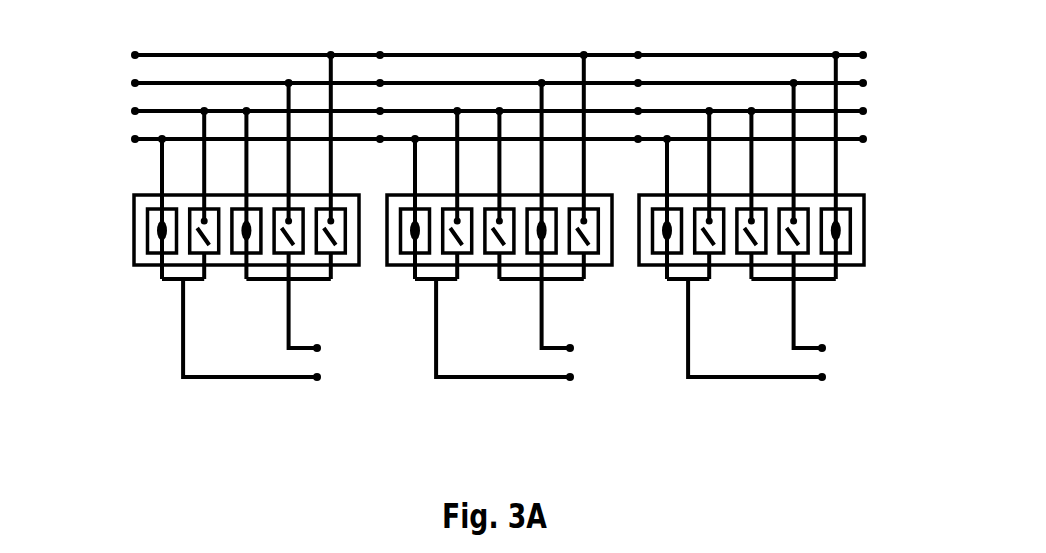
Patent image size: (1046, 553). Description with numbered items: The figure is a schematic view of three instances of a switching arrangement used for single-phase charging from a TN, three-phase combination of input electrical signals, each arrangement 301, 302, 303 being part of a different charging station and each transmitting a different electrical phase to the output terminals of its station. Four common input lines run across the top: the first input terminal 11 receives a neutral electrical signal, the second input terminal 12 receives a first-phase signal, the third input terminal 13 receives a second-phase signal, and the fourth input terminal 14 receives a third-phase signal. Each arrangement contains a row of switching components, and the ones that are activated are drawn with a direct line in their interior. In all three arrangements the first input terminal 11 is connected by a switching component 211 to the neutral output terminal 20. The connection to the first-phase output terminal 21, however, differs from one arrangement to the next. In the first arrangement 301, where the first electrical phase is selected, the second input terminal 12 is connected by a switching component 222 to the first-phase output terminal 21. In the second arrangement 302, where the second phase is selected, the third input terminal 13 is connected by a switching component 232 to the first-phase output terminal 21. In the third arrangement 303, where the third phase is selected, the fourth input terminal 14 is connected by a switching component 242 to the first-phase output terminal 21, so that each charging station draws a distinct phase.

The first input terminal 11 is at (135, 139).
The second input terminal 12 is at (135, 111).
The third input terminal 13 is at (135, 83).
The fourth input terminal 14 is at (135, 55).
The neutral output terminal 20 is at (317, 377).
The first-phase output terminal 21 is at (317, 348).
The switching component 211 is at (153, 256).
The switching component 222 is at (237, 256).
The switching component 232 is at (530, 256).
The switching component 242 is at (846, 256).
The first arrangement 301 is at (134, 212).
The second arrangement 302 is at (386, 261).
The third arrangement 303 is at (865, 207).